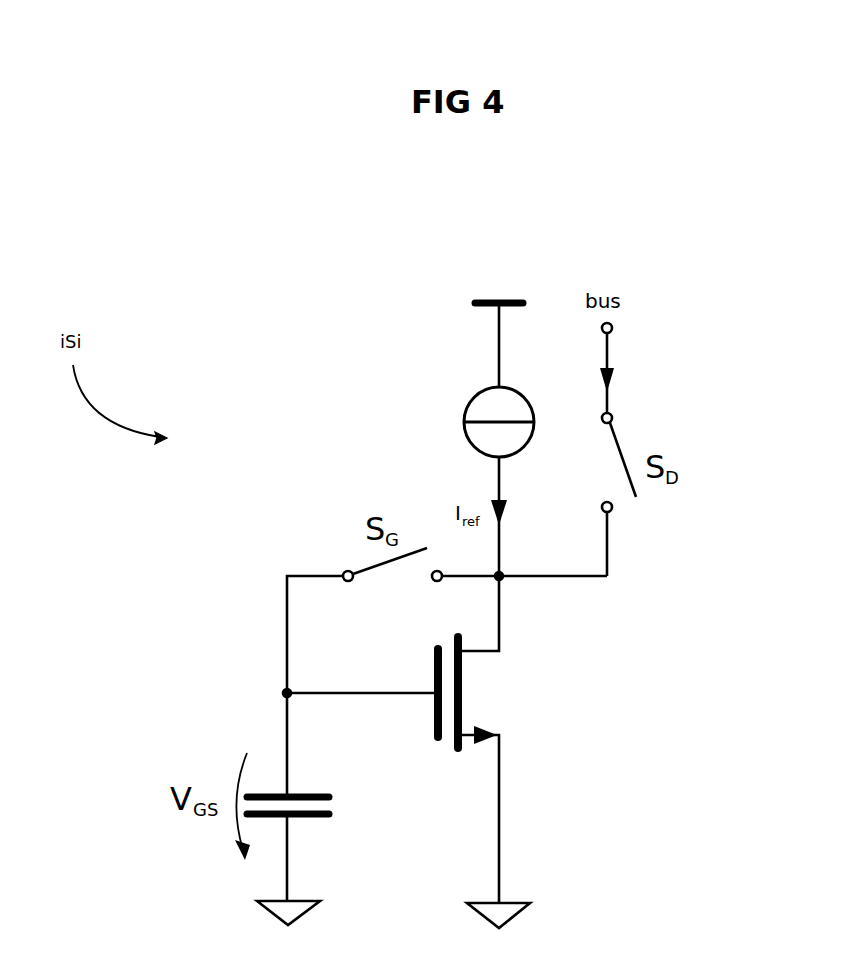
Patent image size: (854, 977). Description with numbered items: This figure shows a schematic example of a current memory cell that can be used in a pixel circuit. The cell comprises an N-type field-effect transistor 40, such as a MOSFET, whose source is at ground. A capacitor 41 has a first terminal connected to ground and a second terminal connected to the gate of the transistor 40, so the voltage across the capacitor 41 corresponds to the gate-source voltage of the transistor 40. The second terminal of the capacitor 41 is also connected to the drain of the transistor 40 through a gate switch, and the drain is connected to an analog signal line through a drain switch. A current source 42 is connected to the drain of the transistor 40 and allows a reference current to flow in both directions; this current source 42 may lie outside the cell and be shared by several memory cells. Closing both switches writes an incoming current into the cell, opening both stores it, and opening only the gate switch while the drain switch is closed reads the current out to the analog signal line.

The N-type field-effect transistor 40 is at (536, 690).
The capacitor 41 is at (363, 812).
The current source 42 is at (443, 422).